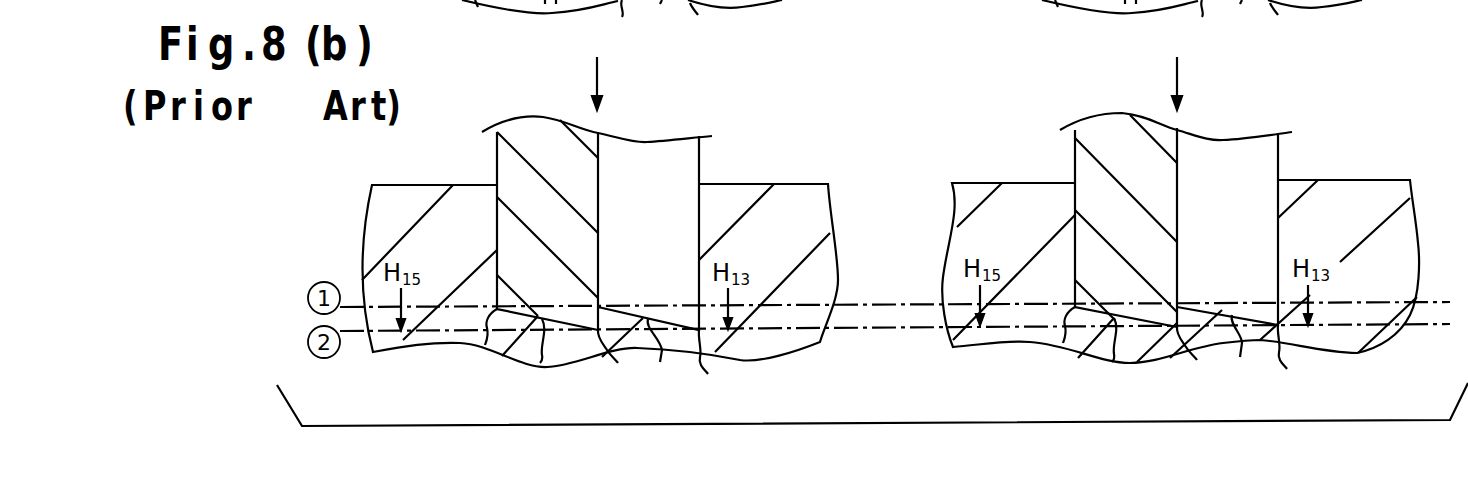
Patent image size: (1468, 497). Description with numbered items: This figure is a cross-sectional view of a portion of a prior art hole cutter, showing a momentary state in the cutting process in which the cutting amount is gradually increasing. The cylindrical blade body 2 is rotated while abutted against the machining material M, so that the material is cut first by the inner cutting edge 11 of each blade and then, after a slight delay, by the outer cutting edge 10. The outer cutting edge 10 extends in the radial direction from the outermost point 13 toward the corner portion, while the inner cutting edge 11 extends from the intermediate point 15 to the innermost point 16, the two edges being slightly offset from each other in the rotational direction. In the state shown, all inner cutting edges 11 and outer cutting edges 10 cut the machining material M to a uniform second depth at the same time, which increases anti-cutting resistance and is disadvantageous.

The blade body 2 is at (650, 139).
The outer cutting edge 10 is at (951, 197).
The inner cutting edge 11 is at (1108, 368).
The outermost point 13 is at (1002, 207).
The intermediate point 15 is at (910, 207).
The innermost point 16 is at (1055, 351).
The machining material M is at (402, 198).